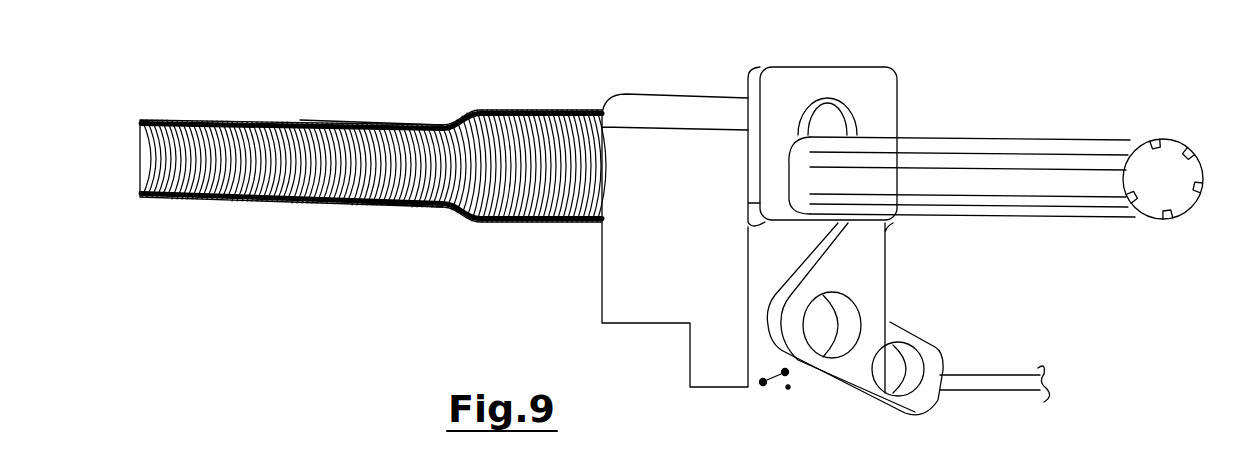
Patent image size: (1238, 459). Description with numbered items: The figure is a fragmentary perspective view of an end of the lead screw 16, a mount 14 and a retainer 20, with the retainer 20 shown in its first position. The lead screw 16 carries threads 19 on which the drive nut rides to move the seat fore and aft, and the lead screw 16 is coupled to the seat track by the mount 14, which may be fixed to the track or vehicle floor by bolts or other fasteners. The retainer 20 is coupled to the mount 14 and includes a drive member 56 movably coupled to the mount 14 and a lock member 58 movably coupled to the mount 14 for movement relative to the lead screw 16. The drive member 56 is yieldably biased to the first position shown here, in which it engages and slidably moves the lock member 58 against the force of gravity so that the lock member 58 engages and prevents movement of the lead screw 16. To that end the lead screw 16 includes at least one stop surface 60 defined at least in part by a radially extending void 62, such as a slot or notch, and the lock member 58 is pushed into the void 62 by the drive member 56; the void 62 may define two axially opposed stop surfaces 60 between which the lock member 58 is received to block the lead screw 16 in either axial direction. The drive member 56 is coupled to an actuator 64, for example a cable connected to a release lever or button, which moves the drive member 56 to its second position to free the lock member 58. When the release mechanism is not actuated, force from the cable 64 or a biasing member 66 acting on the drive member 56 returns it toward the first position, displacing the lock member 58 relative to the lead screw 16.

The mount 14 is at (617, 255).
The lead screw 16 is at (352, 104).
The threads 19 is at (225, 118).
The retainer 20 is at (918, 44).
The drive member 56 is at (885, 332).
The lock member 58 is at (790, 77).
The stop surface 60 is at (802, 202).
The void 62 is at (785, 372).
The actuator 64 is at (1017, 383).
The biasing member 66 is at (787, 388).